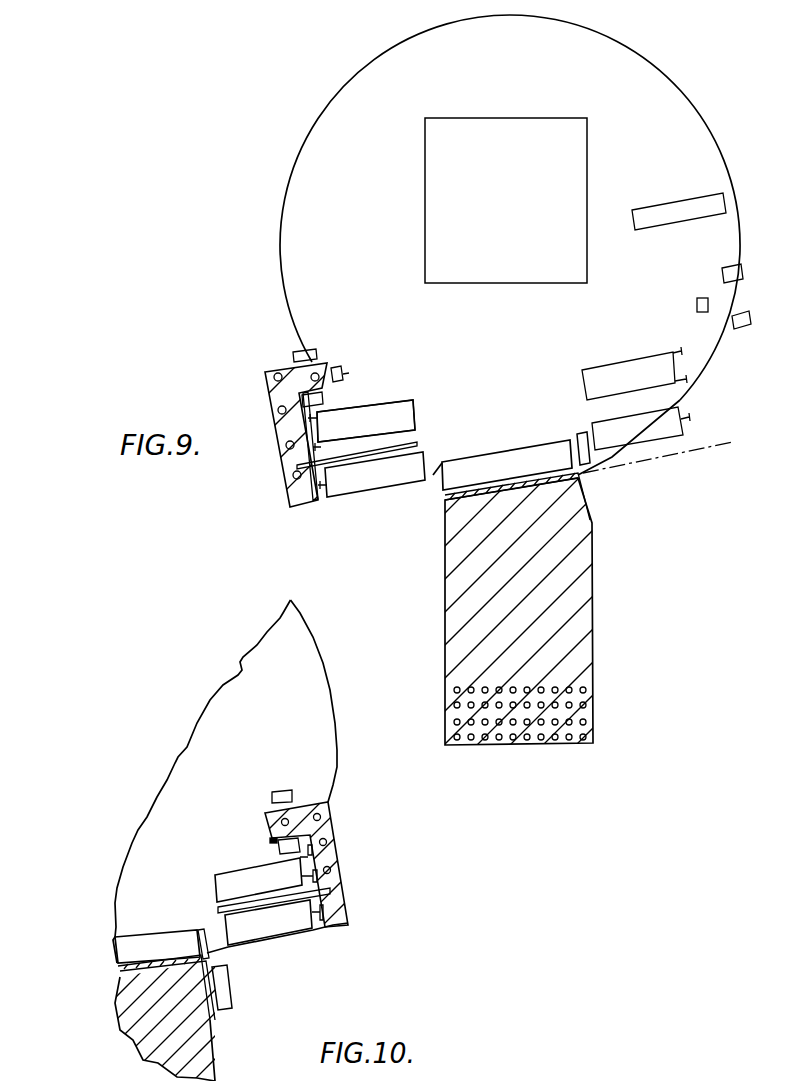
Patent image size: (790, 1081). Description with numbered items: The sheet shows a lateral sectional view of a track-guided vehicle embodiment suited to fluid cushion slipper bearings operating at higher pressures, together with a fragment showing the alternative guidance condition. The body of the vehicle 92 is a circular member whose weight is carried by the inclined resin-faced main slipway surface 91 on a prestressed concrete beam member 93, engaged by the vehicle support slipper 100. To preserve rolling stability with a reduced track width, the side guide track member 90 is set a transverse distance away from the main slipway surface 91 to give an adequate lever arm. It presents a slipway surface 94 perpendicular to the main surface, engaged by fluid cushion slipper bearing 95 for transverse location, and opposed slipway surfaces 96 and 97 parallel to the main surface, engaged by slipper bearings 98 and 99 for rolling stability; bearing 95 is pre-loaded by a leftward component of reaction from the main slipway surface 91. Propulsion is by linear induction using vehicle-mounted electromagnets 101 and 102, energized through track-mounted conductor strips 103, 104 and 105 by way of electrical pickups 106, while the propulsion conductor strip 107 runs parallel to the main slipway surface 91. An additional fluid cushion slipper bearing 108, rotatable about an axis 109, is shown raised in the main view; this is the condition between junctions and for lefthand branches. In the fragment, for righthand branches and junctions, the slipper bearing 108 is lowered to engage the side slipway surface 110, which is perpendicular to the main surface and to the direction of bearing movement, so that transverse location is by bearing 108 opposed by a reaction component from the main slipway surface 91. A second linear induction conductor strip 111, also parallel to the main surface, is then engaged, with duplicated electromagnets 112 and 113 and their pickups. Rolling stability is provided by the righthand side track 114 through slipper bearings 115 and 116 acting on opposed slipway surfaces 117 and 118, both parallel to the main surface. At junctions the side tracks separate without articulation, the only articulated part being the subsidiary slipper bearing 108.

In FIG. 9, the side guide track member 90 is at (303, 440).
In FIG. 9, the main slipway surface 91 is at (448, 493).
In FIG. 10, the main slipway surface 91 is at (123, 964).
In FIG. 9, the vehicle body 92 is at (520, 326).
In FIG. 10, the vehicle body 92 is at (213, 782).
In FIG. 9, the concrete beam member 93 is at (456, 592).
In FIG. 10, the concrete beam member 93 is at (141, 1035).
In FIG. 9, the slipway surface 94 is at (335, 366).
In FIG. 9, the fluid cushion slipper bearing 95 is at (354, 368).
In FIG. 9, the opposed slipway surface 96 is at (283, 368).
In FIG. 9, the opposed slipway surface 97 is at (328, 394).
In FIG. 9, the fluid cushion slipper bearing 98 is at (298, 352).
In FIG. 9, the fluid cushion slipper bearing 99 is at (302, 398).
In FIG. 9, the vehicle support slipper 100 is at (515, 458).
In FIG. 10, the vehicle support slipper 100 is at (133, 948).
In FIG. 9, the vehicle-mounted electromagnet 101 is at (383, 404).
In FIG. 9, the vehicle-mounted electromagnet 102 is at (410, 420).
In FIG. 9, the track-mounted conductor strip 103 is at (307, 417).
In FIG. 9, the track-mounted conductor strip 104 is at (302, 463).
In FIG. 9, the track-mounted conductor strip 105 is at (313, 493).
In FIG. 9, the electrical pickup 106 is at (316, 440).
In FIG. 9, the propulsion conductor strip 107 is at (416, 444).
In FIG. 9, the additional fluid cushion slipper bearing 108 is at (578, 433).
In FIG. 10, the additional fluid cushion slipper bearing 108 is at (222, 993).
In FIG. 9, the axis 109 is at (642, 466).
In FIG. 10, the side slipway surface 110 is at (203, 940).
In FIG. 10, the second linear induction conductor strip 111 is at (237, 913).
In FIG. 10, the electromagnet 112 is at (245, 878).
In FIG. 10, the electromagnet 113 is at (272, 928).
In FIG. 10, the righthand side track 114 is at (327, 850).
In FIG. 9, the slipper bearing 115 is at (727, 270).
In FIG. 10, the slipper bearing 115 is at (281, 791).
In FIG. 9, the slipper bearing 116 is at (733, 321).
In FIG. 10, the slipper bearing 116 is at (280, 850).
In FIG. 10, the opposed slipway surface 117 is at (328, 802).
In FIG. 10, the opposed slipway surface 118 is at (270, 840).